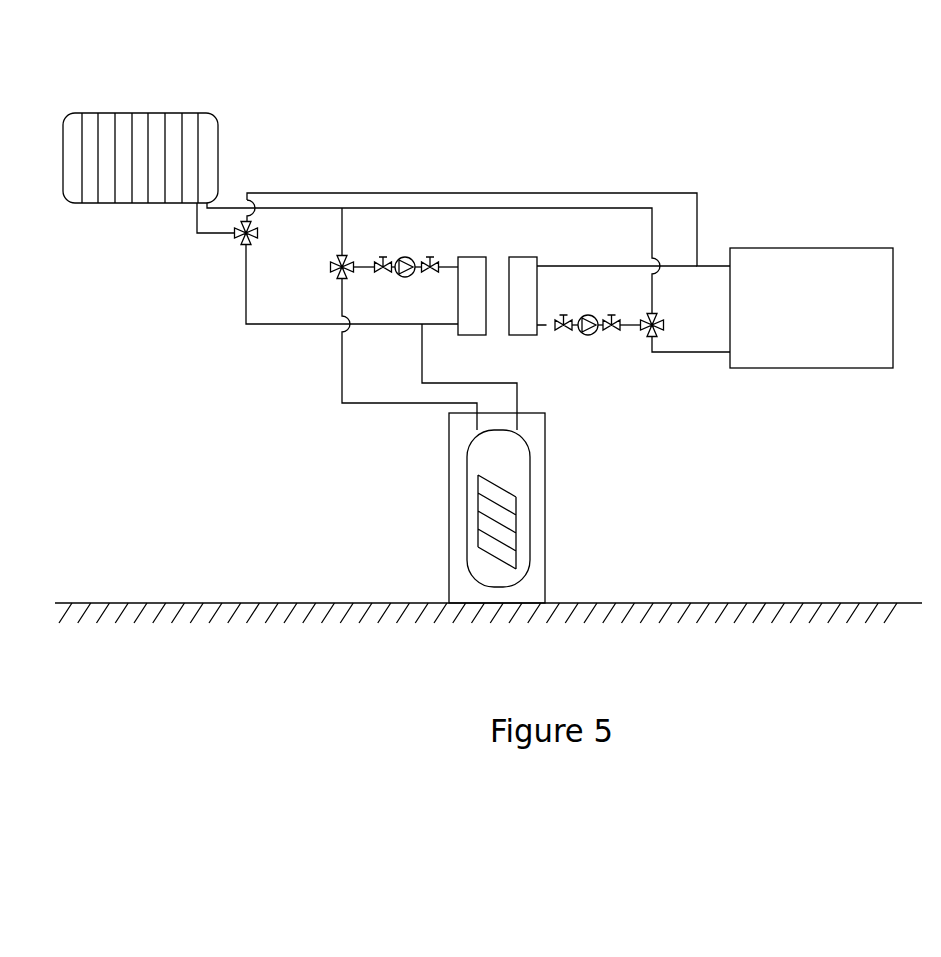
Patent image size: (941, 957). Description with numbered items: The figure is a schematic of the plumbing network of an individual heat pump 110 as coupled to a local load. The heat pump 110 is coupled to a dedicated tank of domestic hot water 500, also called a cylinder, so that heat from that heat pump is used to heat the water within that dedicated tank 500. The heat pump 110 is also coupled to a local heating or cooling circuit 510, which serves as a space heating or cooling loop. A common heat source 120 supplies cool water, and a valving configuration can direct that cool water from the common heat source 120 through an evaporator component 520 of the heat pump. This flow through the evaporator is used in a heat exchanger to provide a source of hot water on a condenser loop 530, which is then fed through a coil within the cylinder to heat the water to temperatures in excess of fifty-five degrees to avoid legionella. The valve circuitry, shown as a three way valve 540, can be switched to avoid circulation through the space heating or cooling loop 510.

The local heating or cooling circuit 510 is at (298, 128).
The heat pump 110 is at (613, 140).
The common heat source 120 is at (796, 248).
The three way valve 540 is at (297, 277).
The condenser loop 530 is at (392, 358).
The evaporator component 520 is at (613, 358).
The tank of domestic hot water 500 is at (557, 487).